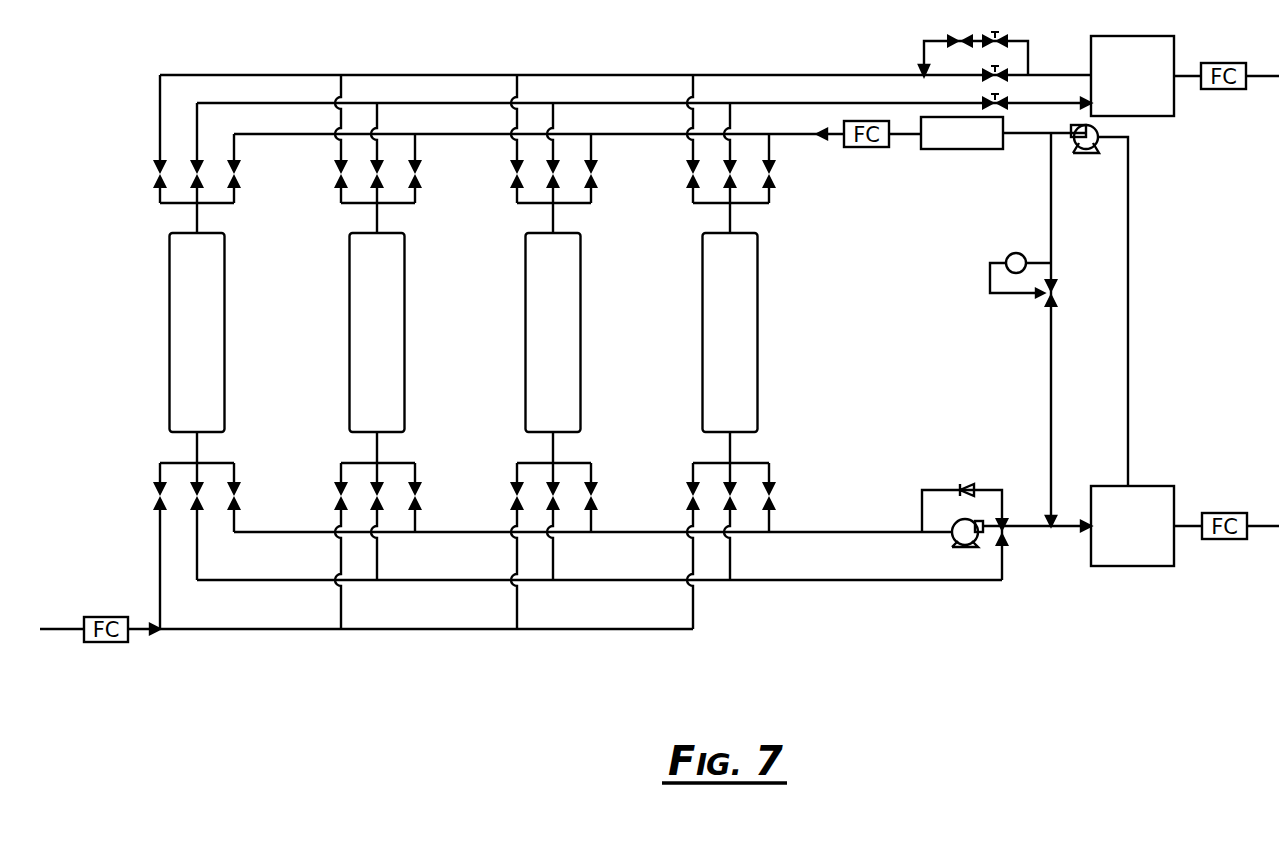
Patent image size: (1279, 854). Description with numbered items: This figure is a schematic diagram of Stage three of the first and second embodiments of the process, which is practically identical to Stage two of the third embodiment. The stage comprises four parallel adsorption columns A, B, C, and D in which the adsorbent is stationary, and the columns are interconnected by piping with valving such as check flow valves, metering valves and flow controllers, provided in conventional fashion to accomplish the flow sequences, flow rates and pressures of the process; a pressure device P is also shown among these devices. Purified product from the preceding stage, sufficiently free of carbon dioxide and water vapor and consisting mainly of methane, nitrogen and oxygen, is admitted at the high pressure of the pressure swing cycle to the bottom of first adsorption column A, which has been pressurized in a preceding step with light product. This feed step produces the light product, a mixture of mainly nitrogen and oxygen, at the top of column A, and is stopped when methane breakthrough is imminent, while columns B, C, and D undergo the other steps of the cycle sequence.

The first adsorption column A is at (197, 352).
The adsorption column B is at (378, 352).
The adsorption column C is at (554, 352).
The adsorption column D is at (731, 352).
The pressure sensor P is at (1020, 275).